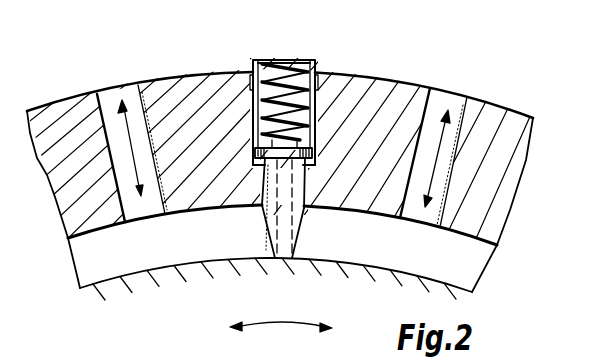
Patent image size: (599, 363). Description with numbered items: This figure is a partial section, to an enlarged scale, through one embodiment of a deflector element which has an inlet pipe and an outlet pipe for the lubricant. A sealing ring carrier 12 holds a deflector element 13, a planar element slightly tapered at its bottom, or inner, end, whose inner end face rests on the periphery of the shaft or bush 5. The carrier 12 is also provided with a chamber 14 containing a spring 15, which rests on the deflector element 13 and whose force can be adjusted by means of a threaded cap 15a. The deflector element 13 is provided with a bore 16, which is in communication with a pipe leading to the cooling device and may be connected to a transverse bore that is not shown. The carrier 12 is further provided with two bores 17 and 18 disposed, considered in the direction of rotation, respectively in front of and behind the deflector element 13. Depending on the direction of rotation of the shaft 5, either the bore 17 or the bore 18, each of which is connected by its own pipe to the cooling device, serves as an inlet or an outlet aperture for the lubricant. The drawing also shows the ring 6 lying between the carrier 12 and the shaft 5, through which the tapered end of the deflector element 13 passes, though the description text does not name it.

The shaft or bush 5 is at (185, 268).
The ring 6 is at (483, 260).
The sealing ring carrier 12 is at (397, 92).
The deflector element 13 is at (265, 243).
The chamber 14 is at (323, 85).
The spring 15 is at (258, 92).
The threaded cap 15a is at (295, 61).
The bore 16 is at (285, 200).
The bore 17 is at (460, 120).
The bore 18 is at (108, 115).